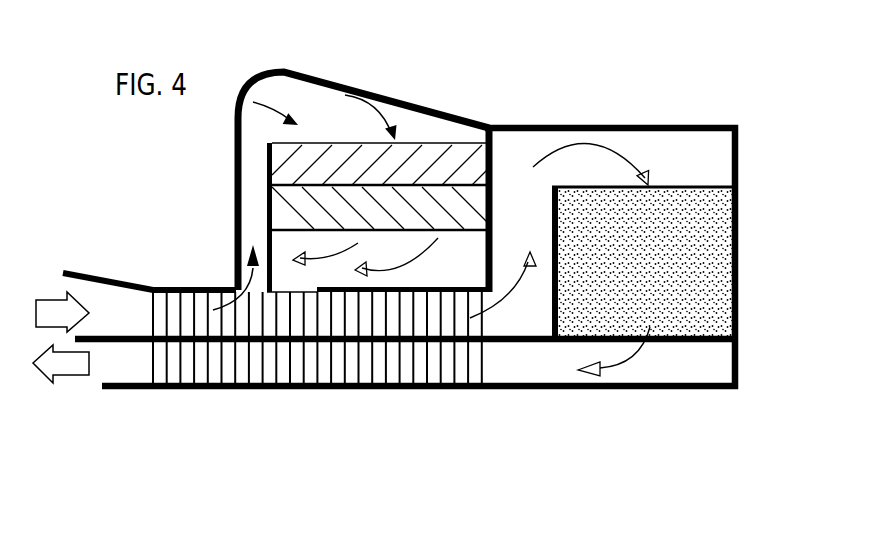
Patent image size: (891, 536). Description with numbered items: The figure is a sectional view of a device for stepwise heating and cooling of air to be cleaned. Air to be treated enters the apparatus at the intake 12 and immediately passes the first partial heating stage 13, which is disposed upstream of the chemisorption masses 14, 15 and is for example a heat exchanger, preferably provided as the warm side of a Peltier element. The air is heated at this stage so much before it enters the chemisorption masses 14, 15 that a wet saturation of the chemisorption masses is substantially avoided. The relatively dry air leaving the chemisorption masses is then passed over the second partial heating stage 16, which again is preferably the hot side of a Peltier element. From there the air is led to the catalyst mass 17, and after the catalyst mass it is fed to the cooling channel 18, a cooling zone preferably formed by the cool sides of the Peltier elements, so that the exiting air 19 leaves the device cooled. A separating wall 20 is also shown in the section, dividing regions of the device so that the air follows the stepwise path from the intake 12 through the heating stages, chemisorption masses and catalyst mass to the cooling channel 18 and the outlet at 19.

The intake 12 is at (110, 318).
The first partial heating stage 13 is at (163, 313).
The chemisorption mass 14 is at (347, 163).
The chemisorption mass 15 is at (337, 206).
The second partial heating stage 16 is at (359, 313).
The catalyst mass 17 is at (677, 252).
The cooling channel 18 is at (445, 362).
The exiting air 19 is at (69, 370).
The separating wall 20 is at (242, 238).